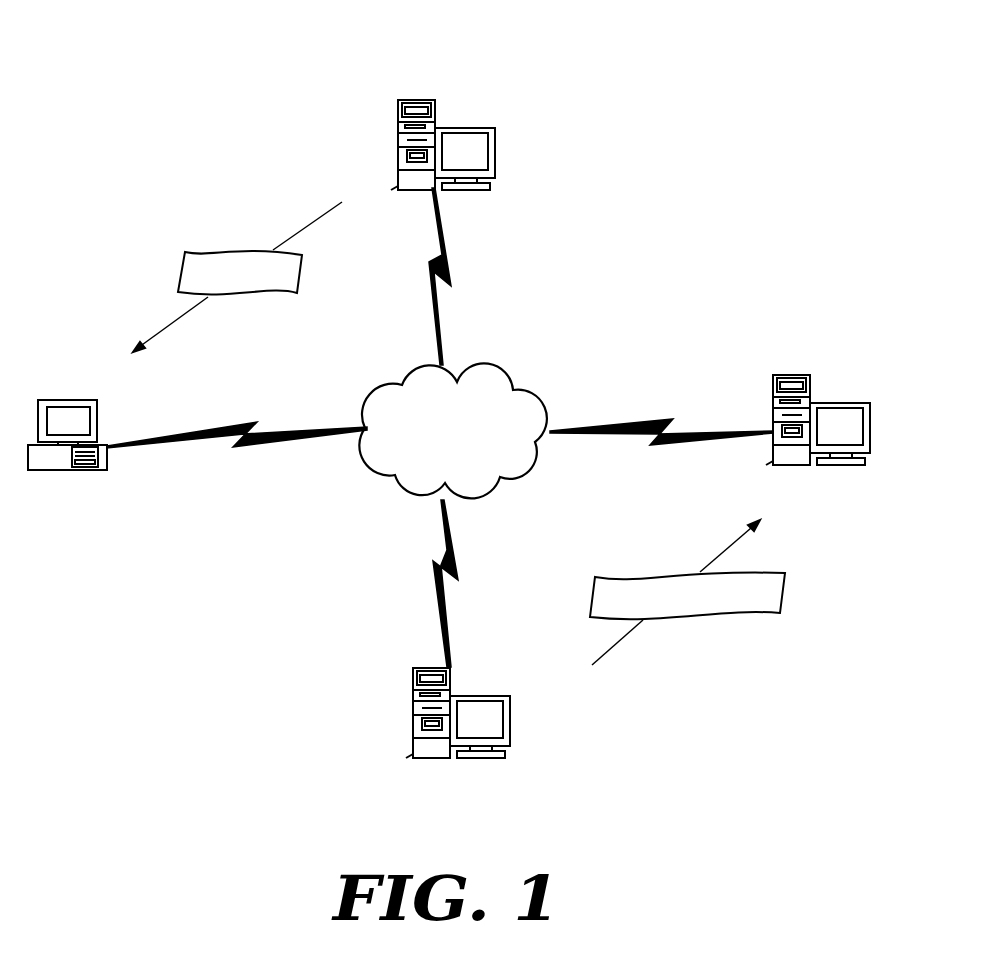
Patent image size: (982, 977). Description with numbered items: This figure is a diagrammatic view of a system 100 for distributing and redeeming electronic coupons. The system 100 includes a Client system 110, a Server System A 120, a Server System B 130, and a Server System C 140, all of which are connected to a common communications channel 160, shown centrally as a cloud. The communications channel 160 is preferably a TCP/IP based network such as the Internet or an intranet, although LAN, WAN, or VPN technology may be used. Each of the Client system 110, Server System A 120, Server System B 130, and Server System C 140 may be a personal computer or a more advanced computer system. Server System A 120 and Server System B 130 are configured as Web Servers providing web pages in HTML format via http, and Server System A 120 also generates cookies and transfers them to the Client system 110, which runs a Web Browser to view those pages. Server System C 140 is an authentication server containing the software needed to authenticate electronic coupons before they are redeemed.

The system 100 is at (227, 100).
The Client system 110 is at (65, 400).
The Server System A 120 is at (490, 128).
The Server System B 130 is at (845, 403).
The Server System C 140 is at (478, 696).
The communications channel 160 is at (510, 372).